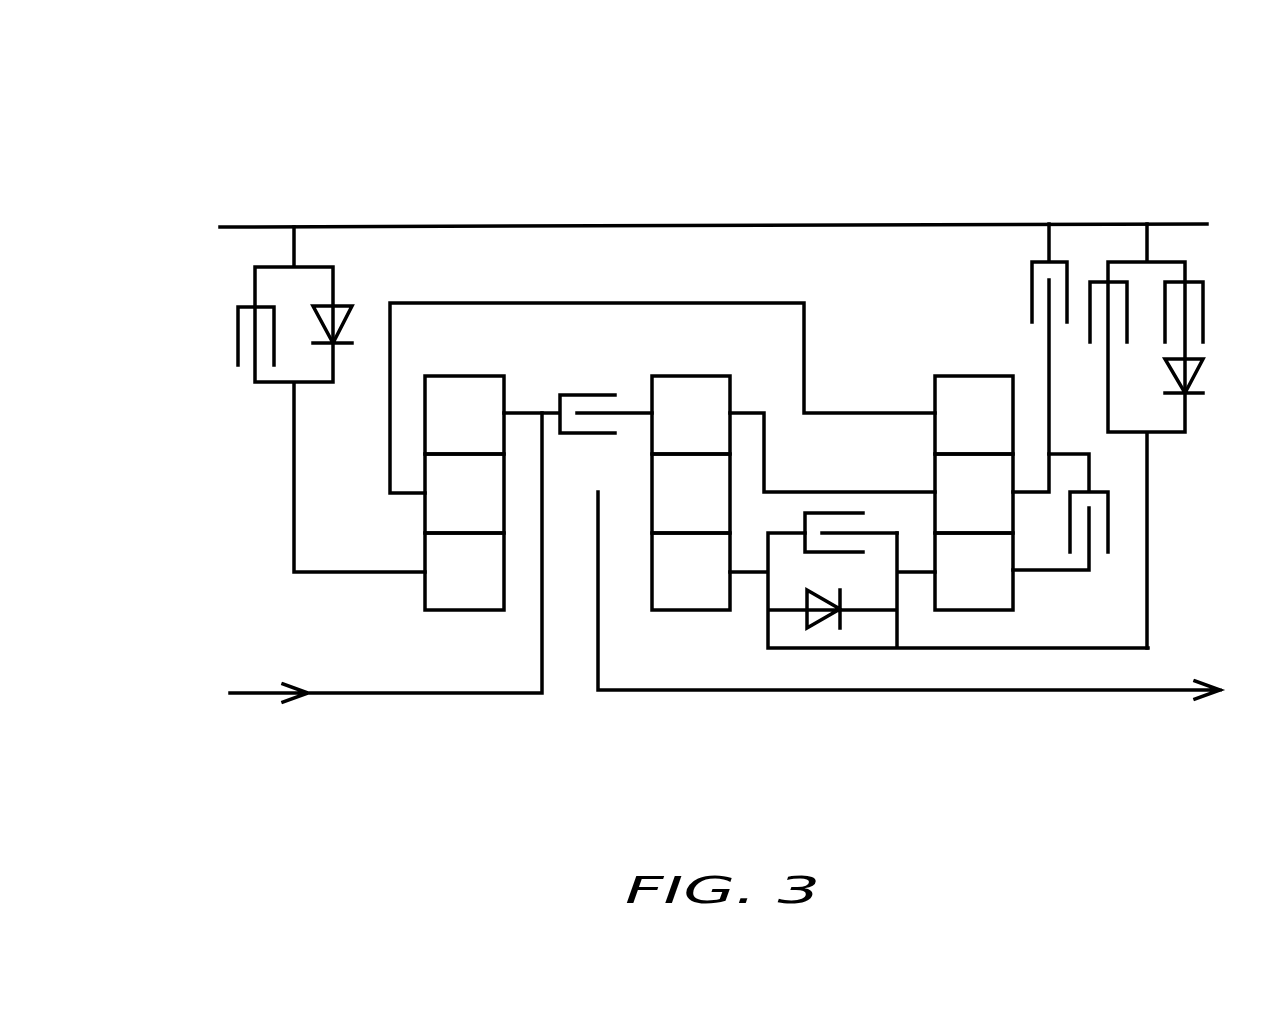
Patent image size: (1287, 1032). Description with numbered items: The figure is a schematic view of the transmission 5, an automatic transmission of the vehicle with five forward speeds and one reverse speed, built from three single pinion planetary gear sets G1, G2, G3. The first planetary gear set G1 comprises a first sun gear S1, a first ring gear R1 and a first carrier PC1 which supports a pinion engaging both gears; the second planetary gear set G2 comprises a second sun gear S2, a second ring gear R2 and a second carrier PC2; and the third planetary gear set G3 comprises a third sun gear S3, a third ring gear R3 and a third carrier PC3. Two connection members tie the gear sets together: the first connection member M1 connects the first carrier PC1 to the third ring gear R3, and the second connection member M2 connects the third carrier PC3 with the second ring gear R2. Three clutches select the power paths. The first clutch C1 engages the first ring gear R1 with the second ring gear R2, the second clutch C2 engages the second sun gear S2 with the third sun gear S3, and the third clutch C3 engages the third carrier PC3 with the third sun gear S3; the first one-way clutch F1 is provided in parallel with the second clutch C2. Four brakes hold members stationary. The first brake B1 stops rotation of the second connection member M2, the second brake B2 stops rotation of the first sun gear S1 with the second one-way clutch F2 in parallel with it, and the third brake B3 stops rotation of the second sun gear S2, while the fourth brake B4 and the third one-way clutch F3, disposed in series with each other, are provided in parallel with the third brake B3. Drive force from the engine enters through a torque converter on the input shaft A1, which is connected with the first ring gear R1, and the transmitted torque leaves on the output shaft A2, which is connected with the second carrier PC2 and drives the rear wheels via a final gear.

The transmission 5 is at (373, 124).
The first brake B1 is at (1028, 358).
The second brake B2 is at (316, 399).
The third brake B3 is at (1125, 436).
The fourth brake B4 is at (1205, 310).
The first one-way clutch F1 is at (939, 612).
The second one-way clutch F2 is at (344, 302).
The third one-way clutch F3 is at (1205, 379).
The first clutch C1 is at (578, 395).
The second clutch C2 is at (832, 513).
The third clutch C3 is at (1060, 533).
The first planetary gear set G1 is at (464, 459).
The second planetary gear set G2 is at (691, 459).
The third planetary gear set G3 is at (974, 459).
The first ring gear R1 is at (464, 415).
The second ring gear R2 is at (691, 415).
The third ring gear R3 is at (974, 415).
The first carrier PC1 is at (464, 493).
The second carrier PC2 is at (691, 493).
The third carrier PC3 is at (974, 493).
The first sun gear S1 is at (464, 571).
The second sun gear S2 is at (691, 571).
The third sun gear S3 is at (974, 571).
The first connection member M1 is at (690, 303).
The second connection member M2 is at (754, 413).
The input shaft A1 is at (365, 696).
The output shaft A2 is at (1070, 693).